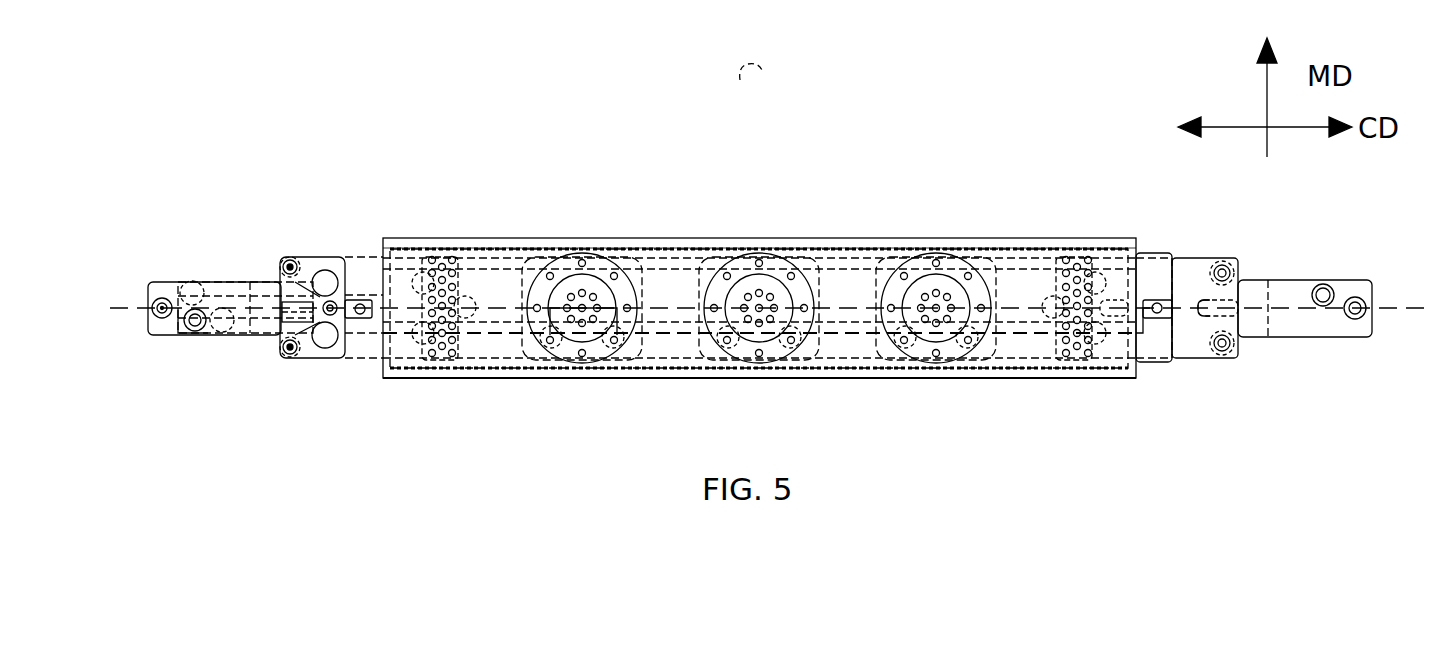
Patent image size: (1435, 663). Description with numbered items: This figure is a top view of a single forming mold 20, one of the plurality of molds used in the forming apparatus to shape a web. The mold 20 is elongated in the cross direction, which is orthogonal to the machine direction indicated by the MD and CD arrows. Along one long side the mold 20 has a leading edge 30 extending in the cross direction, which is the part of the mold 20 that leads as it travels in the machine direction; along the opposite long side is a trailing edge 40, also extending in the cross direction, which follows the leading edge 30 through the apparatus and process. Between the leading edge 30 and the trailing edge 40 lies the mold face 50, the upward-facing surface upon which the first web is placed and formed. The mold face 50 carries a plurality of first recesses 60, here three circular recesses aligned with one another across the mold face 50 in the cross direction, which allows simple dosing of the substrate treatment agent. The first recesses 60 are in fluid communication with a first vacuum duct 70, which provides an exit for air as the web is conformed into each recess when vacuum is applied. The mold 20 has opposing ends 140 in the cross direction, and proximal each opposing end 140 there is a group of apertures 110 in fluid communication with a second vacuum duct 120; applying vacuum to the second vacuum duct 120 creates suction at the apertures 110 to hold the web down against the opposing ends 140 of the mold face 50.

The forming mold 20 is at (855, 282).
The leading edge 30 is at (747, 240).
The trailing edge 40 is at (773, 379).
The mold face 50 is at (494, 306).
The first recesses 60 is at (614, 272).
The first vacuum duct 70 is at (355, 270).
The apertures 110 is at (456, 357).
The second vacuum duct 120 is at (365, 352).
The opposing ends 140 is at (415, 347).